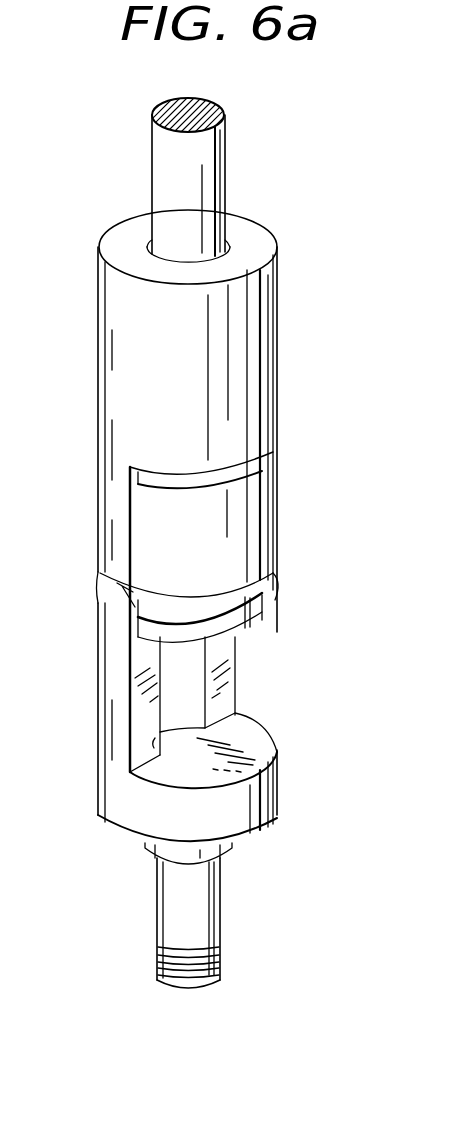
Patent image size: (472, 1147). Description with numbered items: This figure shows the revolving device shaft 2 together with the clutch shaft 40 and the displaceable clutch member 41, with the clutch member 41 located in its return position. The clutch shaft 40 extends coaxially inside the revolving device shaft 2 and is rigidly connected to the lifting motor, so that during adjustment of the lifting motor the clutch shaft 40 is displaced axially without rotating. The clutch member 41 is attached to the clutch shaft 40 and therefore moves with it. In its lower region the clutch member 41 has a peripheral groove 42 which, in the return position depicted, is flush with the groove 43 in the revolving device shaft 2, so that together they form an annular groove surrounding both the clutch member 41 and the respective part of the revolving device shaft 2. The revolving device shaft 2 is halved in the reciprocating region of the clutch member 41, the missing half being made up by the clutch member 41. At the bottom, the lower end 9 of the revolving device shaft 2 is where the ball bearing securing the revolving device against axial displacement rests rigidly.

The revolving device shaft 2 is at (248, 348).
The clutch shaft 40 is at (208, 173).
The clutch member 41 is at (248, 513).
The peripheral groove 42 is at (263, 587).
The groove 43 is at (110, 585).
The lower end 9 is at (175, 927).